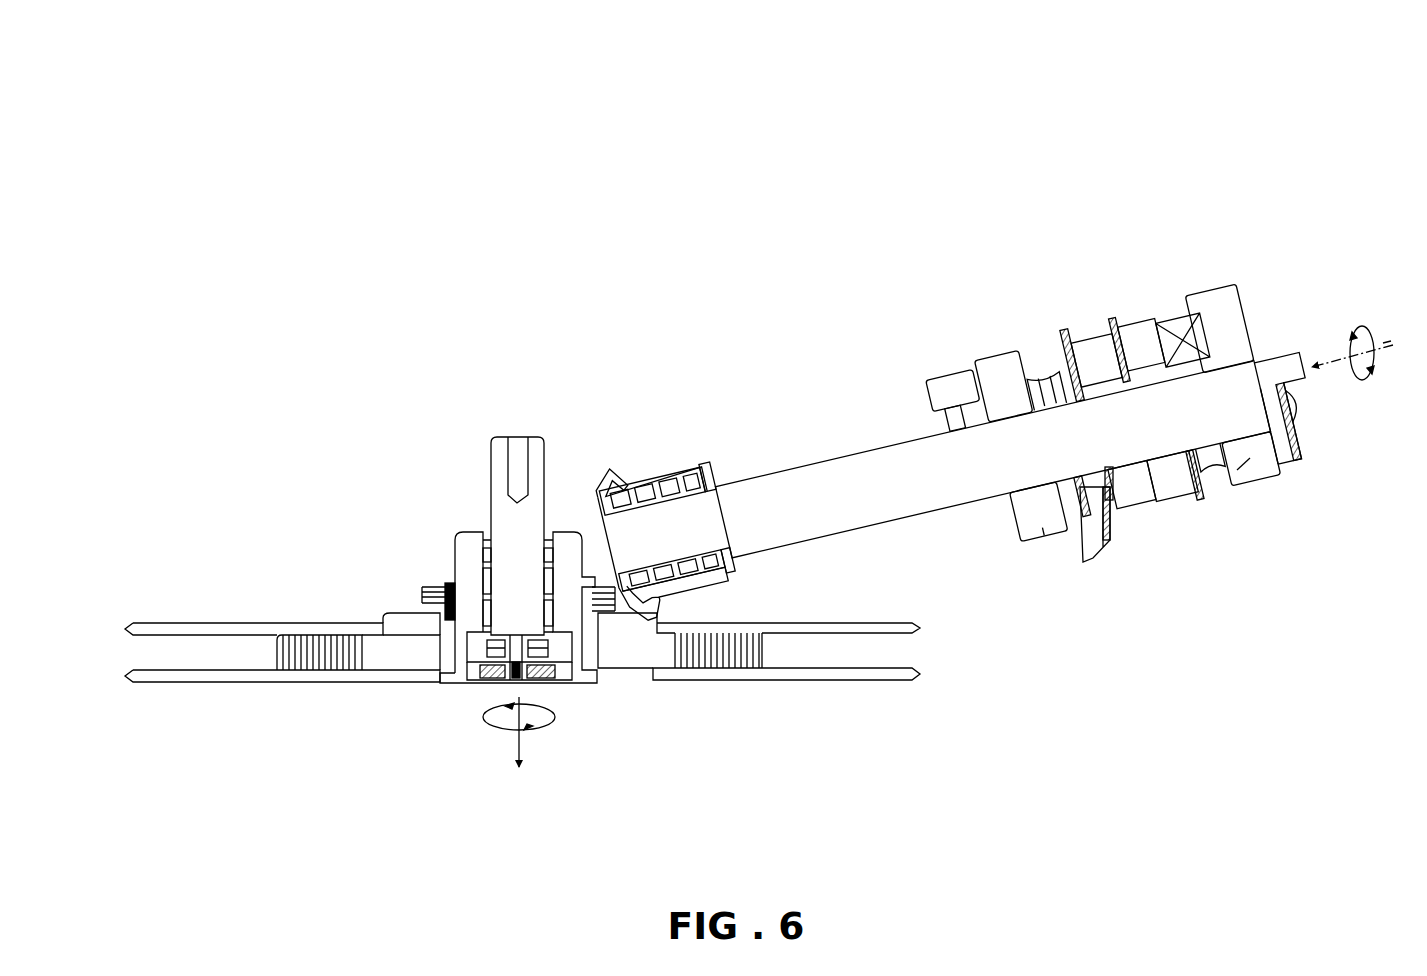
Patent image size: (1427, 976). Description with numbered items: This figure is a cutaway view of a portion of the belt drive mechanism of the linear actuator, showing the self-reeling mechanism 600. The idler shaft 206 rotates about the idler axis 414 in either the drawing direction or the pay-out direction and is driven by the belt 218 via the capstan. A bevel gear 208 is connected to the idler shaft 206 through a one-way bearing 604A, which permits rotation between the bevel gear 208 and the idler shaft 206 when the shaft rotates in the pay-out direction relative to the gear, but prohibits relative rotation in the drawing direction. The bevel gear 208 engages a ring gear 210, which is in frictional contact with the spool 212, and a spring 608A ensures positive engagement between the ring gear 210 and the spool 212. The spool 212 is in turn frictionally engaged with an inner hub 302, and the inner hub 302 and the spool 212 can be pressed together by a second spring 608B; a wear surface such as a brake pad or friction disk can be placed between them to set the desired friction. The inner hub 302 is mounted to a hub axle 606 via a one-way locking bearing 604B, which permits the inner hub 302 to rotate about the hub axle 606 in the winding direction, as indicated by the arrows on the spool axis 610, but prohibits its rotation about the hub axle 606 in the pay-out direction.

The self-reeling mechanism 600 is at (597, 60).
The hub axle 606 is at (496, 443).
The one-way locking bearing 604B is at (485, 534).
The spring 608A is at (440, 590).
The ring gear 210 is at (397, 618).
The belt 218 is at (282, 642).
The spool 212 is at (405, 666).
The inner hub 302 is at (470, 637).
The spring 608B is at (543, 680).
The spool axis 610 is at (522, 745).
The bevel gear 208 is at (637, 490).
The one-way bearing 604A is at (681, 498).
The idler shaft 206 is at (851, 453).
The idler axis 414 is at (1387, 345).